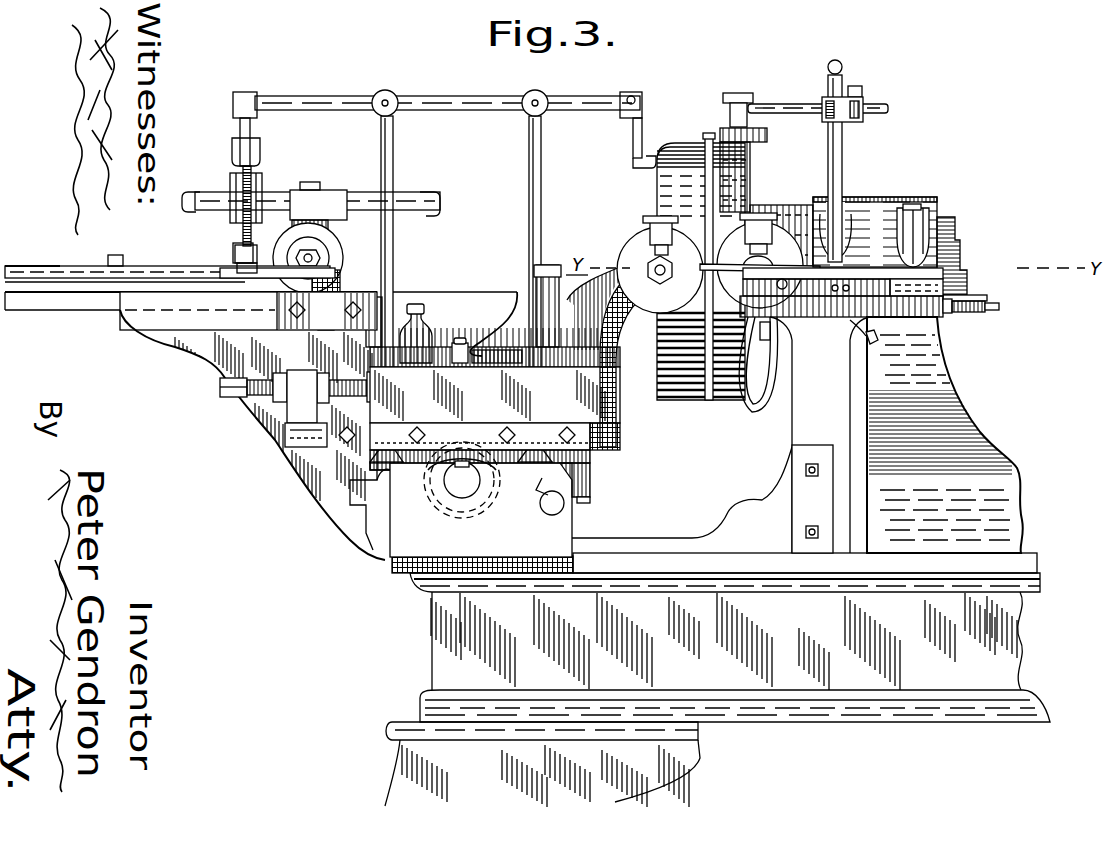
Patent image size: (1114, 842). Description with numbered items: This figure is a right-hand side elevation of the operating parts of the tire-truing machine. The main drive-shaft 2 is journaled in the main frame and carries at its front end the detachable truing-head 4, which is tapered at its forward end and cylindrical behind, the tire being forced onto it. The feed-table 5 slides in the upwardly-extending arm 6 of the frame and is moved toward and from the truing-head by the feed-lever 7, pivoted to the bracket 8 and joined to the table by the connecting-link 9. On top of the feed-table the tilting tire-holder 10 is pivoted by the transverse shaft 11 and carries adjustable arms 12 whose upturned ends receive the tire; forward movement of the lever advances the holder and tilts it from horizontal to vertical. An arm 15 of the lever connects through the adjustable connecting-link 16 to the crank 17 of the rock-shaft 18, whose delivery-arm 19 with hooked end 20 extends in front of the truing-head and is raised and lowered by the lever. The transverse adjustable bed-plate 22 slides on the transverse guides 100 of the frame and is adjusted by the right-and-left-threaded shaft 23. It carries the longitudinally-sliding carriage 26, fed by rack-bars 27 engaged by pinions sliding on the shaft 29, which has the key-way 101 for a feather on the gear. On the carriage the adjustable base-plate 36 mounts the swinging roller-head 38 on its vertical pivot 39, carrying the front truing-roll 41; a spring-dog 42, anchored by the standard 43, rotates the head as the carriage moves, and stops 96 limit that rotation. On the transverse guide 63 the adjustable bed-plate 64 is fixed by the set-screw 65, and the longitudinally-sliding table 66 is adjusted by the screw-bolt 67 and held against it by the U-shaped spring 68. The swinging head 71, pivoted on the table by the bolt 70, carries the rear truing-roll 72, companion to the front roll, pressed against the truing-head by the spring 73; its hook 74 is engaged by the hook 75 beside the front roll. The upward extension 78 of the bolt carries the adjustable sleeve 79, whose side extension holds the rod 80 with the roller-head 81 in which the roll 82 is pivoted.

The main drive-shaft 2 is at (956, 258).
The truing-head 4 is at (683, 389).
The feed-table 5 is at (62, 306).
The upwardly-extending arm 6 is at (192, 348).
The feed-lever 7 is at (58, 266).
The bracket 8 is at (343, 280).
The connecting-link 9 is at (170, 266).
The tilting tire-holder 10 is at (344, 195).
The transverse shaft 11 is at (322, 252).
The adjustable arms 12 is at (441, 190).
The arm of the lever 15 is at (270, 278).
The adjustable connecting-link 16 is at (262, 182).
The crank 17 is at (251, 130).
The rock-shaft 18 is at (328, 104).
The delivery-arm 19 is at (633, 130).
The hooked end 20 is at (641, 166).
The transverse adjustable bed-plate 22 is at (335, 457).
The shaft 23 is at (566, 505).
The longitudinally-sliding carriage 26 is at (280, 412).
The rack-bars 27 is at (282, 448).
The shaft 29 is at (466, 483).
The adjustable base-plate 36 is at (620, 382).
The swinging roller-head 38 is at (618, 351).
The vertical pivot 39 is at (545, 288).
The front truing-roll 41 is at (642, 242).
The spring-dog 42 is at (447, 348).
The standard 43 is at (428, 325).
The transverse guide 63 is at (820, 435).
The adjustable bed-plate 64 is at (925, 312).
The set-screw 65 is at (873, 343).
The longitudinally-sliding table 66 is at (958, 277).
The screw-bolt 67 is at (993, 309).
The U-shaped spring 68 is at (748, 408).
The bolt 70 is at (848, 207).
The swinging head 71 is at (858, 269).
The rear truing-roll 72 is at (777, 232).
The spring 73 is at (793, 297).
The hook 74 is at (770, 262).
The hook 75 is at (700, 252).
The upward extension 78 is at (843, 82).
The sleeve 79 is at (857, 119).
The rod 80 is at (884, 107).
The roller-head 81 is at (750, 98).
The roll 82 is at (768, 134).
The stops 96 is at (482, 362).
The transverse guides 100 is at (462, 487).
The key-way 101 is at (452, 472).